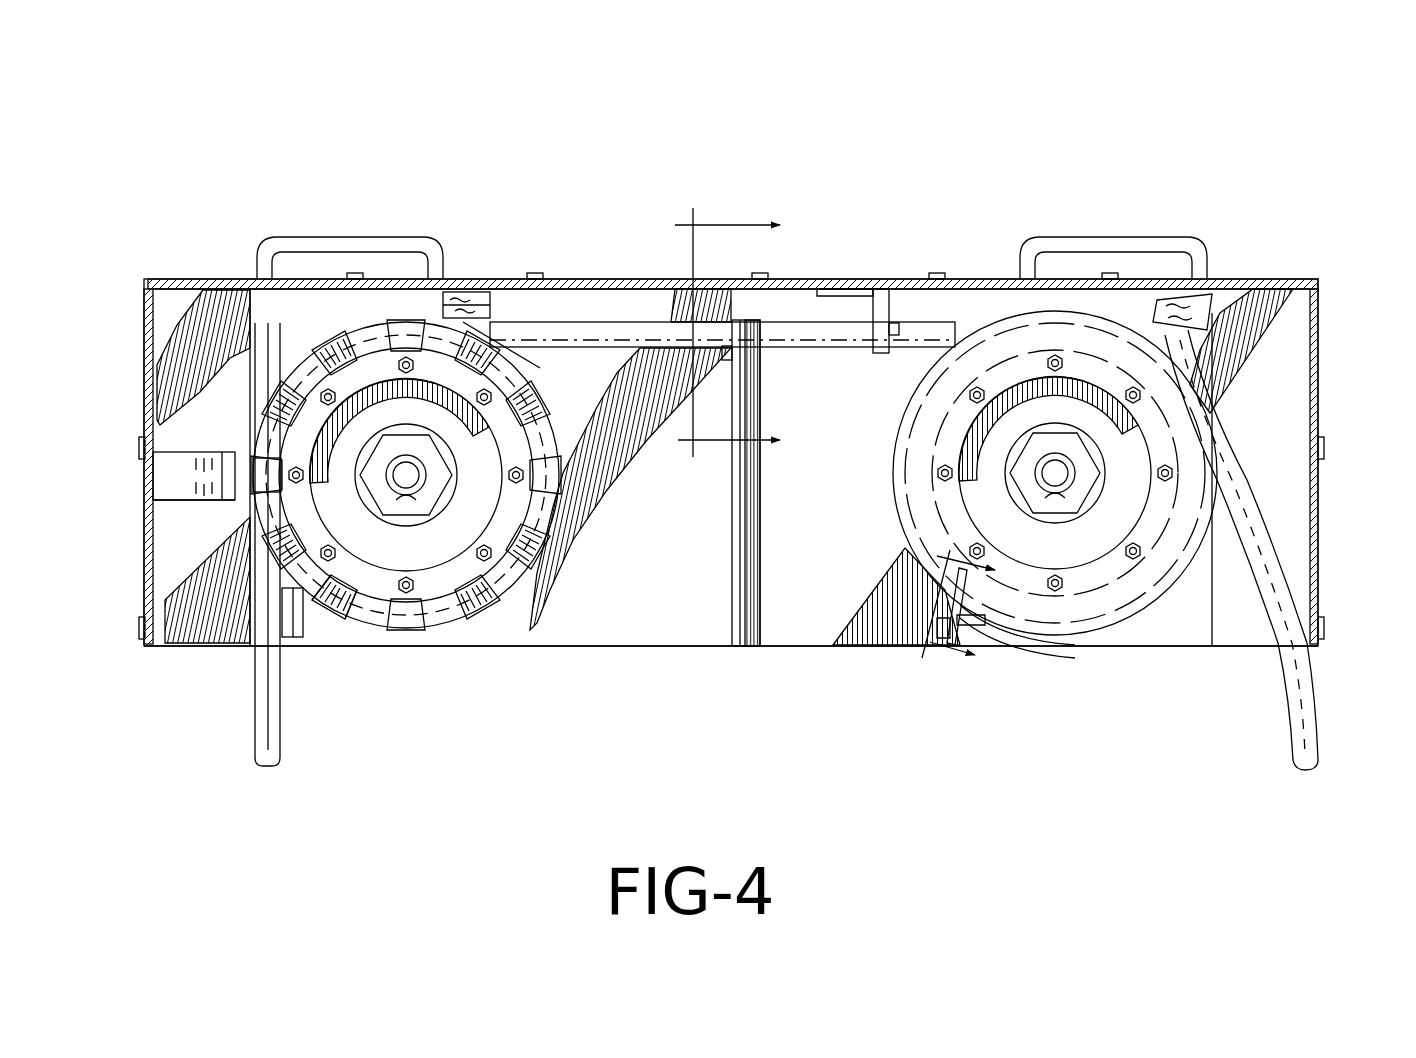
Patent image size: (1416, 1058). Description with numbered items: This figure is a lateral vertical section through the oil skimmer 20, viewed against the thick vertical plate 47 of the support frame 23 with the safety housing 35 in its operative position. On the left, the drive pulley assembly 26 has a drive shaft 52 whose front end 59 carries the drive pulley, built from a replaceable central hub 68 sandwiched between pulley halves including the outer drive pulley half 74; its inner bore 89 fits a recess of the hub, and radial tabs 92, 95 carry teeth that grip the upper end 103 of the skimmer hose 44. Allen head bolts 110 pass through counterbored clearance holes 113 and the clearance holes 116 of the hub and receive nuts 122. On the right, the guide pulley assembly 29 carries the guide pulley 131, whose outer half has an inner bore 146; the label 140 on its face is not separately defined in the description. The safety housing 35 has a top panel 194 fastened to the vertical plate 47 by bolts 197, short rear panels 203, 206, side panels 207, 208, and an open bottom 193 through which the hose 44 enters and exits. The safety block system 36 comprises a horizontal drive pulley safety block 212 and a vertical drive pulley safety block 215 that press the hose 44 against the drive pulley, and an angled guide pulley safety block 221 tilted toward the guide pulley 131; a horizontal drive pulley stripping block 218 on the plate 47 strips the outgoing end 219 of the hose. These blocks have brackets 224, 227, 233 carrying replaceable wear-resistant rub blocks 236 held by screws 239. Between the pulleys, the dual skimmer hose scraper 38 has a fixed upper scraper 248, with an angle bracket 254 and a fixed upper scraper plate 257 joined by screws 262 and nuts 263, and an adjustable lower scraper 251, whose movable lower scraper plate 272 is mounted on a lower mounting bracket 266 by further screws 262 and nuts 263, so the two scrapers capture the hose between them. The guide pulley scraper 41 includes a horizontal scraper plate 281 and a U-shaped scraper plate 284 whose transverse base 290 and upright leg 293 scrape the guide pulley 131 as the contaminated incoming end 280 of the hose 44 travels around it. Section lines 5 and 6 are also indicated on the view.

The oil skimmer 20 is at (1205, 143).
The support frame 23 is at (250, 338).
The drive pulley assembly 26 is at (395, 642).
The guide pulley assembly 29 is at (1165, 613).
The safety housing 35 is at (1325, 332).
The safety block system 36 is at (540, 308).
The dual skimmer hose scraper 38 is at (833, 458).
The guide pulley scraper 41 is at (1033, 670).
The skimmer hose 44 is at (1283, 678).
The vertical plate 47 is at (911, 467).
The drive shaft 52 is at (391, 500).
The front end 59 is at (425, 475).
The central hub 68 is at (406, 475).
The outer drive pulley half 74 is at (412, 632).
The inner bore 89 is at (492, 435).
The radial tabs 92 is at (367, 622).
The radial tabs 95 is at (330, 605).
The upper end 103 is at (607, 322).
The allen head bolts 110 is at (297, 466).
The counterbored clearance holes 113 is at (412, 470).
The clearance holes 116 is at (415, 500).
The nuts 122 is at (492, 553).
The guide pulley 131 is at (901, 412).
The reel plate 140 is at (1055, 503).
The inner bore 146 is at (1150, 475).
The open bottom 193 is at (722, 668).
The top panel 194 is at (817, 292).
The bolts 197 is at (542, 275).
The short rear panel 203 is at (1257, 479).
The short rear panel 206 is at (201, 467).
The side panel 207 is at (1320, 365).
The side panel 208 is at (144, 327).
The horizontal drive pulley safety block 212 is at (208, 505).
The vertical drive pulley safety block 215 is at (437, 309).
The horizontal drive pulley stripping block 218 is at (278, 634).
The outgoing end 219 is at (255, 455).
The angled guide pulley safety block 221 is at (1140, 307).
The bracket 224 is at (192, 477).
The bracket 227 is at (452, 290).
The bracket 233 is at (1183, 292).
The rub block 236 is at (497, 282).
The screws 239 is at (1162, 315).
The fixed upper scraper 248 is at (847, 312).
The adjustable lower scraper 251 is at (768, 388).
The angle bracket 254 is at (893, 290).
The fixed upper scraper plate 257 is at (888, 292).
The screws 262 is at (897, 323).
The nuts 263 is at (727, 355).
The lower mounting bracket 266 is at (733, 535).
The movable lower scraper plate 272 is at (743, 427).
The incoming end 280 is at (1312, 545).
The horizontal scraper plate 281 is at (945, 632).
The U-shaped scraper plate 284 is at (950, 600).
The transverse base 290 is at (1000, 640).
The upright leg 293 is at (960, 574).
The section line 5 is at (718, 339).
The section line 6 is at (945, 605).